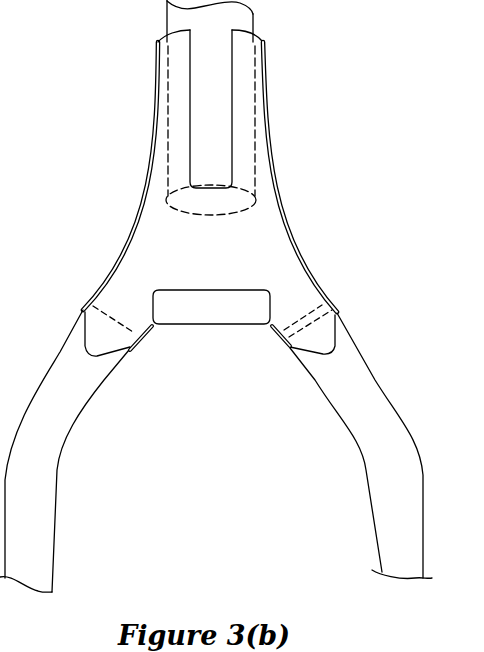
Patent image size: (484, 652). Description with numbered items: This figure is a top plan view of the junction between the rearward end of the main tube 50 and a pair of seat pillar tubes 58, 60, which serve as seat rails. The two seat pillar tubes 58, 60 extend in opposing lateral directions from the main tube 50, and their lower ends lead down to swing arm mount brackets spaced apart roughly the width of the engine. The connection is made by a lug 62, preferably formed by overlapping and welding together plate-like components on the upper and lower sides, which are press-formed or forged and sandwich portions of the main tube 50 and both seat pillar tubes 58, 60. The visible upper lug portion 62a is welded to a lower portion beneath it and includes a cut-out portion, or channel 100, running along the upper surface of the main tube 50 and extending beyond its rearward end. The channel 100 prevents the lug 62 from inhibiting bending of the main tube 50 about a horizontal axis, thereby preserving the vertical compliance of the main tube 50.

The main tube 50 is at (240, 22).
The channel 100 is at (222, 116).
The lug 62 is at (290, 218).
The upper lug portion 62a is at (293, 276).
The seat pillar tube 58 is at (45, 505).
The seat pillar tube 60 is at (380, 472).